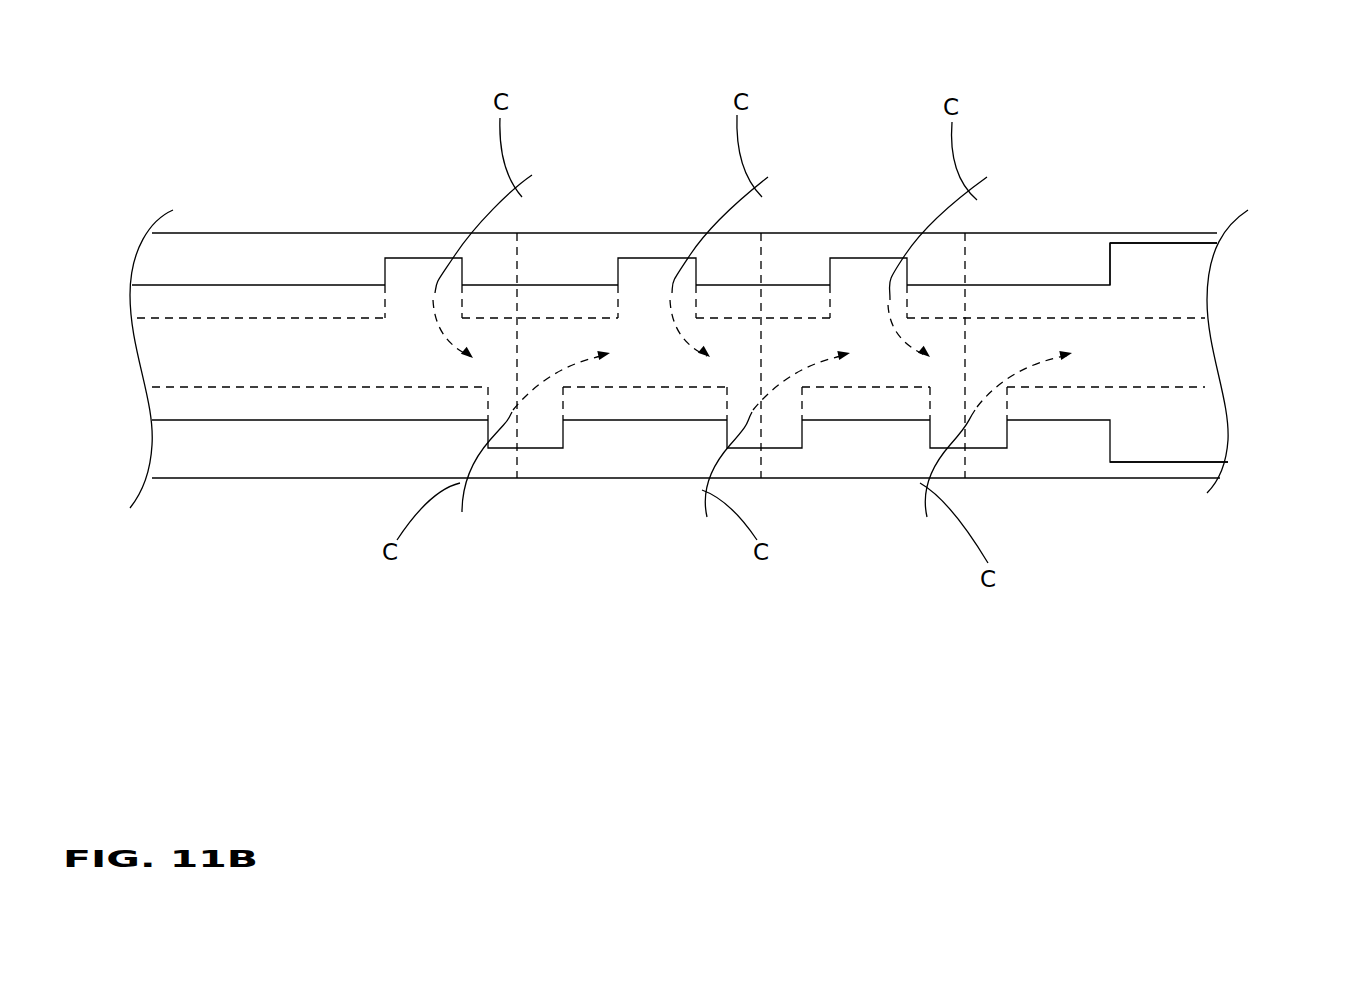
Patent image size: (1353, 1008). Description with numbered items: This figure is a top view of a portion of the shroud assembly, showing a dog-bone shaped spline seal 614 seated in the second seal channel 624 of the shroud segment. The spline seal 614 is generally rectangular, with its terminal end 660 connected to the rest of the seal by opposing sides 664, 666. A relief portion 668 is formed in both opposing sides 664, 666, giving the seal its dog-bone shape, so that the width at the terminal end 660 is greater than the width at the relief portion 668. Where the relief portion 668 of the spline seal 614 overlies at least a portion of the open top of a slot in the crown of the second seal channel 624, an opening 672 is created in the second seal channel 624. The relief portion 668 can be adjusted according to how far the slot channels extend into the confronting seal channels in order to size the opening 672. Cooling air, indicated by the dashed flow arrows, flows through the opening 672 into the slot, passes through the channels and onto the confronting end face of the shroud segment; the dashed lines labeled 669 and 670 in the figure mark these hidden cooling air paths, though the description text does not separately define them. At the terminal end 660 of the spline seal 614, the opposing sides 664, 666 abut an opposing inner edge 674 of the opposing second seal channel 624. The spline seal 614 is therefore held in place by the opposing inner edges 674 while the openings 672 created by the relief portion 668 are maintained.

The spline seal 614 is at (1173, 295).
The second seal channel 624 is at (242, 252).
The terminal end 660 is at (1188, 427).
The opposing side 664 is at (1168, 243).
The opposing side 666 is at (1165, 462).
The relief portion 668 is at (1075, 278).
The flow path 669 is at (970, 242).
The flow path 670 is at (522, 243).
The opening 672 is at (407, 273).
The opposing inner edge 674 is at (305, 232).